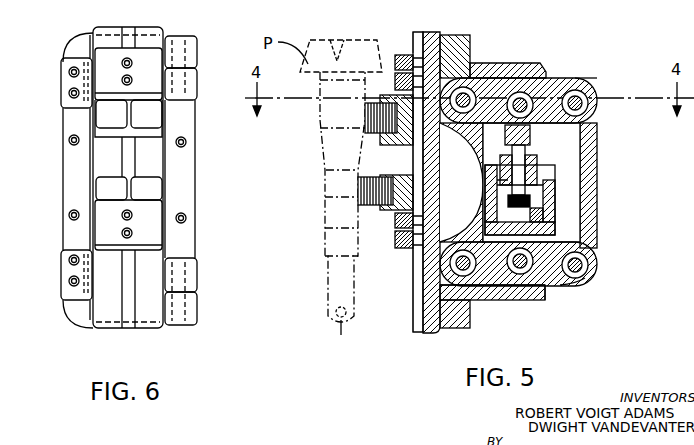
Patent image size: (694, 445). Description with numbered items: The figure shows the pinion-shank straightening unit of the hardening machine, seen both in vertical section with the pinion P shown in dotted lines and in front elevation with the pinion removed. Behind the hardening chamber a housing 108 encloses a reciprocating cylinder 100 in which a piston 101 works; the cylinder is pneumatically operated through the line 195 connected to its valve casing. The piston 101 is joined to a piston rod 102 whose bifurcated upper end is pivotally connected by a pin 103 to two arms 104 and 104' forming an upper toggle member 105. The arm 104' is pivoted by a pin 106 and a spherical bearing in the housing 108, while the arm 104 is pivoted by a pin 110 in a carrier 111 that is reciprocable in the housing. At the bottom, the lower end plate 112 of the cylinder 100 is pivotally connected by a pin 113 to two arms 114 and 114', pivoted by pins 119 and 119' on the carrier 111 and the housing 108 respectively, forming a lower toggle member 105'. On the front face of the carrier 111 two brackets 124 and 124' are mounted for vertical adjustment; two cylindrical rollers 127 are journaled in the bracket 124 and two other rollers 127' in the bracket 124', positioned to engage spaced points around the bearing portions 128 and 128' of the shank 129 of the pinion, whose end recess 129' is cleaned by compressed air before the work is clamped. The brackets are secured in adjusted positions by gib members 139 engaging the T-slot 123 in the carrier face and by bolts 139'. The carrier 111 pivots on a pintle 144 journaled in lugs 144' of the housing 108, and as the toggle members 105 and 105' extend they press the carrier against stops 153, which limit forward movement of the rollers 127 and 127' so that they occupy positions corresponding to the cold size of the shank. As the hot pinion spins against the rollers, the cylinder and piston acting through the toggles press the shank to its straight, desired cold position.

In FIG. 5, the reciprocating cylinder 100 is at (541, 200).
In FIG. 5, the piston 101 is at (544, 179).
In FIG. 5, the piston rod 102 is at (519, 151).
In FIG. 5, the pin 103 is at (522, 98).
In FIG. 5, the arm 104 is at (518, 79).
In FIG. 5, the arm 104' is at (586, 78).
In FIG. 5, the toggle member 105 is at (507, 141).
In FIG. 5, the lower toggle member 105' is at (552, 312).
In FIG. 5, the pin 106 is at (592, 97).
In FIG. 6, the housing 108 is at (75, 165).
In FIG. 5, the housing 108 is at (586, 172).
In FIG. 5, the pin 110 is at (464, 92).
In FIG. 6, the carrier 111 is at (108, 315).
In FIG. 5, the carrier 111 is at (434, 333).
In FIG. 5, the lower end plate 112 is at (545, 232).
In FIG. 5, the pin 113 is at (518, 301).
In FIG. 5, the arm 114 is at (492, 312).
In FIG. 5, the arm 114' is at (583, 301).
In FIG. 5, the pin 119 is at (482, 279).
In FIG. 5, the pin 119' is at (601, 269).
In FIG. 5, the T-slot 123 is at (420, 333).
In FIG. 5, the bracket 124 is at (395, 133).
In FIG. 5, the bracket 124' is at (389, 227).
In FIG. 6, the cylindrical rollers 127 is at (169, 92).
In FIG. 5, the cylindrical rollers 127 is at (333, 118).
In FIG. 6, the cylindrical rollers 127' is at (129, 213).
In FIG. 5, the cylindrical rollers 127' is at (334, 191).
In FIG. 5, the bearing portion 128 is at (317, 140).
In FIG. 5, the bearing portion 128' is at (316, 209).
In FIG. 5, the shank 129 is at (322, 205).
In FIG. 5, the recess 129' is at (341, 49).
In FIG. 5, the gib members 139 is at (418, 166).
In FIG. 5, the bolts 139' is at (391, 124).
In FIG. 6, the pintle 144 is at (201, 179).
In FIG. 6, the lugs 144' is at (203, 176).
In FIG. 6, the stops 153 is at (68, 80).
In FIG. 5, the line 195 is at (560, 215).